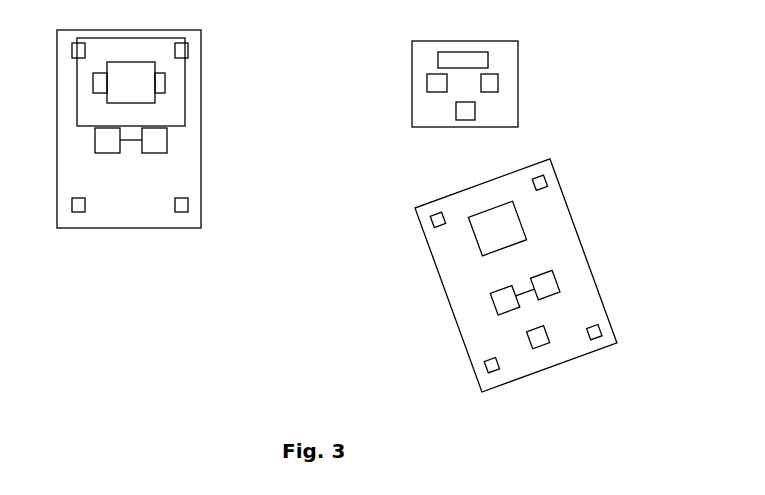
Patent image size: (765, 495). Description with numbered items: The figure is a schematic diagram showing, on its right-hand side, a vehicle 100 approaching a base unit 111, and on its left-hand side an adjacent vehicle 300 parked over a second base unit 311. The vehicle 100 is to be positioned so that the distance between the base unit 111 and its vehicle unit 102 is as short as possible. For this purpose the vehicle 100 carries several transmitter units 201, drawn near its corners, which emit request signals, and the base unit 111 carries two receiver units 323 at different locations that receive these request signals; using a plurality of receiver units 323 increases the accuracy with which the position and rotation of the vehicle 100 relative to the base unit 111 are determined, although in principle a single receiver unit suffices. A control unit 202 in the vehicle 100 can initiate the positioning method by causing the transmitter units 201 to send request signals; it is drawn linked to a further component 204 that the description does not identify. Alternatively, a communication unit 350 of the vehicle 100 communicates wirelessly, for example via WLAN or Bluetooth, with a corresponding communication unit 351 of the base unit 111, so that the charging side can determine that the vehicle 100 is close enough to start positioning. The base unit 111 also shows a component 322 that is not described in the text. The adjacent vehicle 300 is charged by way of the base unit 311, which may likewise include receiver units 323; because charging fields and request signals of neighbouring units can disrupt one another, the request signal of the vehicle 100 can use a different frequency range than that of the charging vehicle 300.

The vehicle 300 is at (202, 205).
The base unit 311 is at (186, 60).
The base unit 111 is at (518, 62).
The component 322 is at (437, 57).
The receiver unit 323 is at (432, 82).
The communication unit 351 is at (465, 117).
The vehicle 100 is at (578, 223).
The transmitter unit 201 is at (547, 183).
The vehicle unit 102 is at (480, 242).
The control unit 202 is at (557, 280).
The component 204 is at (496, 305).
The communication unit 350 is at (537, 346).